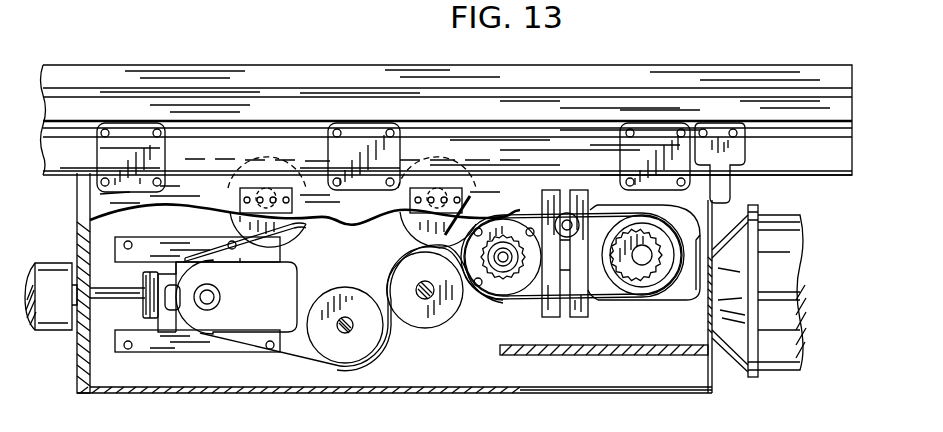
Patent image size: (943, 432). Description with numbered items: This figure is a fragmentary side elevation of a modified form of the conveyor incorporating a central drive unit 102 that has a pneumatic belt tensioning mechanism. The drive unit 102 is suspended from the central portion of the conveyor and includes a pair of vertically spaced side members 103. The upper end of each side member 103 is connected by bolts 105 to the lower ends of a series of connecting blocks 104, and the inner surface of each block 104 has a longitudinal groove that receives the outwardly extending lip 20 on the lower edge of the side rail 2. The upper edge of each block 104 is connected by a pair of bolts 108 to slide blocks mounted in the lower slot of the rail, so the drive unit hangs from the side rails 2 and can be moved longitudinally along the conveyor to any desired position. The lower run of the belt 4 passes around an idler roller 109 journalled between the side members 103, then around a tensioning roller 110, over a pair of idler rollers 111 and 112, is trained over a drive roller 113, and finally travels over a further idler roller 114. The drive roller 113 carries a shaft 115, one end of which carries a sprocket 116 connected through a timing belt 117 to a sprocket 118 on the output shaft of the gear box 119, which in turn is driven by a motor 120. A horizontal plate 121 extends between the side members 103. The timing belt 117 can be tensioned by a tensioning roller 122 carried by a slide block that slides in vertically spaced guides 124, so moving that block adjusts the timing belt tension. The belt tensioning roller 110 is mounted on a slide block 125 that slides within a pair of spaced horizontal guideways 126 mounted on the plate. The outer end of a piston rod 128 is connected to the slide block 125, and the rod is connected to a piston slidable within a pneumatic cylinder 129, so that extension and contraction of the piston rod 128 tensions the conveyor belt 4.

The side rail 2 is at (757, 65).
The belt 4 is at (307, 362).
The lip 20 is at (820, 176).
The central drive unit 102 is at (245, 366).
The side member 103 is at (566, 393).
The connecting block 104 is at (128, 130).
The bolt 105 is at (120, 203).
The bolt 108 is at (105, 129).
The idler roller 109 is at (290, 227).
The tensioning roller 110 is at (245, 297).
The idler roller 111 is at (366, 346).
The idler roller 112 is at (433, 326).
The drive roller 113 is at (508, 290).
The idler roller 114 is at (413, 230).
The shaft 115 is at (506, 250).
The sprocket 116 is at (515, 300).
The timing belt 117 is at (603, 290).
The sprocket 118 is at (661, 279).
The gear box 119 is at (684, 236).
The motor 120 is at (788, 285).
The horizontal plate 121 is at (655, 357).
The tensioning roller 122 is at (570, 213).
The guide 124 is at (553, 308).
The slide block 125 is at (207, 326).
The guideway 126 is at (116, 246).
The piston rod 128 is at (111, 295).
The pneumatic cylinder 129 is at (56, 282).